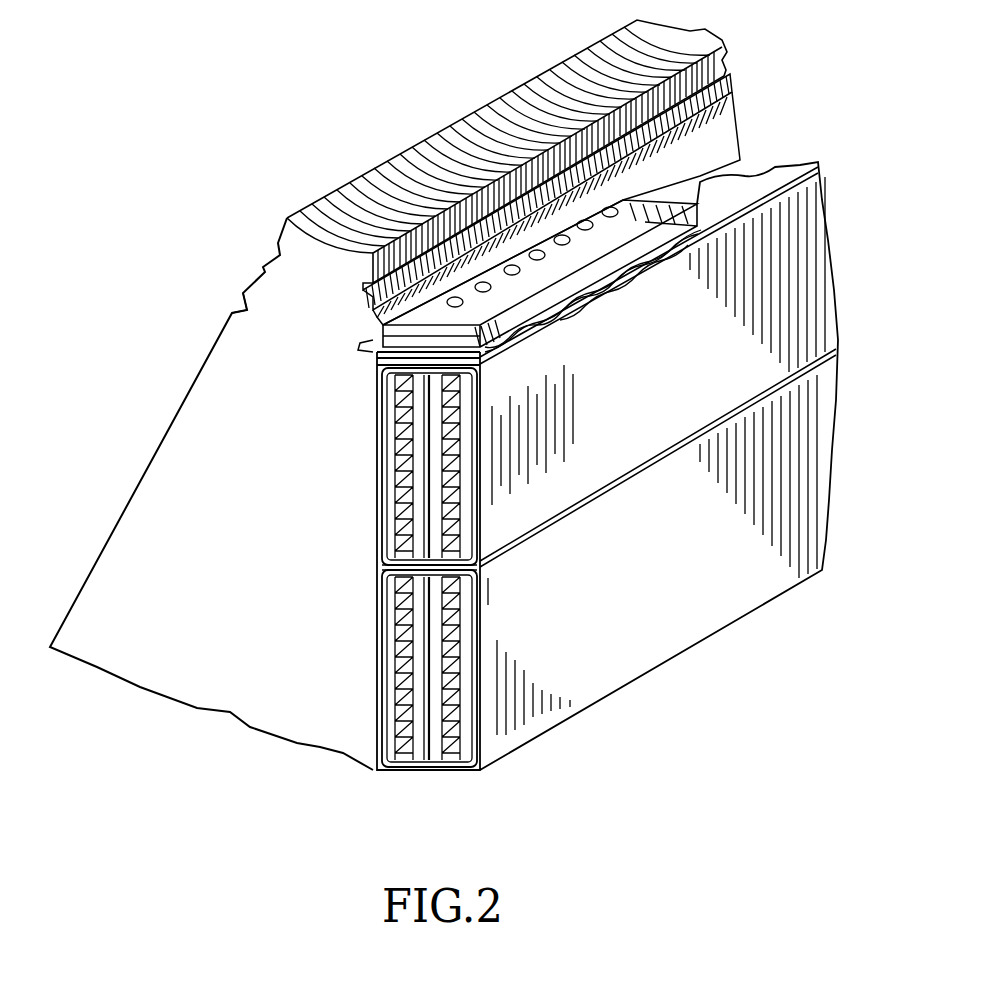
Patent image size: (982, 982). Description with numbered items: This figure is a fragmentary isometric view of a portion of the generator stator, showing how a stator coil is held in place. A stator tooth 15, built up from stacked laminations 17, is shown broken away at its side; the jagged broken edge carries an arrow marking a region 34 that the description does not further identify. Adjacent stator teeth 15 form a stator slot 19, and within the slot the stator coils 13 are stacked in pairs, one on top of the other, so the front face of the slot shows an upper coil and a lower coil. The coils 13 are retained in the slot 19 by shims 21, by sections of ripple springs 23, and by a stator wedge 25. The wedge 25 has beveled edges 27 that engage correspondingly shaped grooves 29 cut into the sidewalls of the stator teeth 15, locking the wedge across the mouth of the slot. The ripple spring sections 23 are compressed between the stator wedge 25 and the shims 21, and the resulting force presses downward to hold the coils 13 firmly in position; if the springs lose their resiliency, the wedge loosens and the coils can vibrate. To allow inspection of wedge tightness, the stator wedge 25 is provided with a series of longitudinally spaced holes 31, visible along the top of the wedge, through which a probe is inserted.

The stator coils 13 is at (423, 487).
The stator teeth 15 is at (170, 487).
The laminations 17 is at (349, 197).
The stator slots 19 is at (377, 534).
The shims 21 is at (467, 381).
The ripple spring sections 23 is at (675, 240).
The stator wedges 25 is at (488, 300).
The beveled edges 27 is at (613, 257).
The grooves 29 is at (360, 342).
The holes 31 is at (548, 268).
The broken-away edge 34 is at (247, 328).